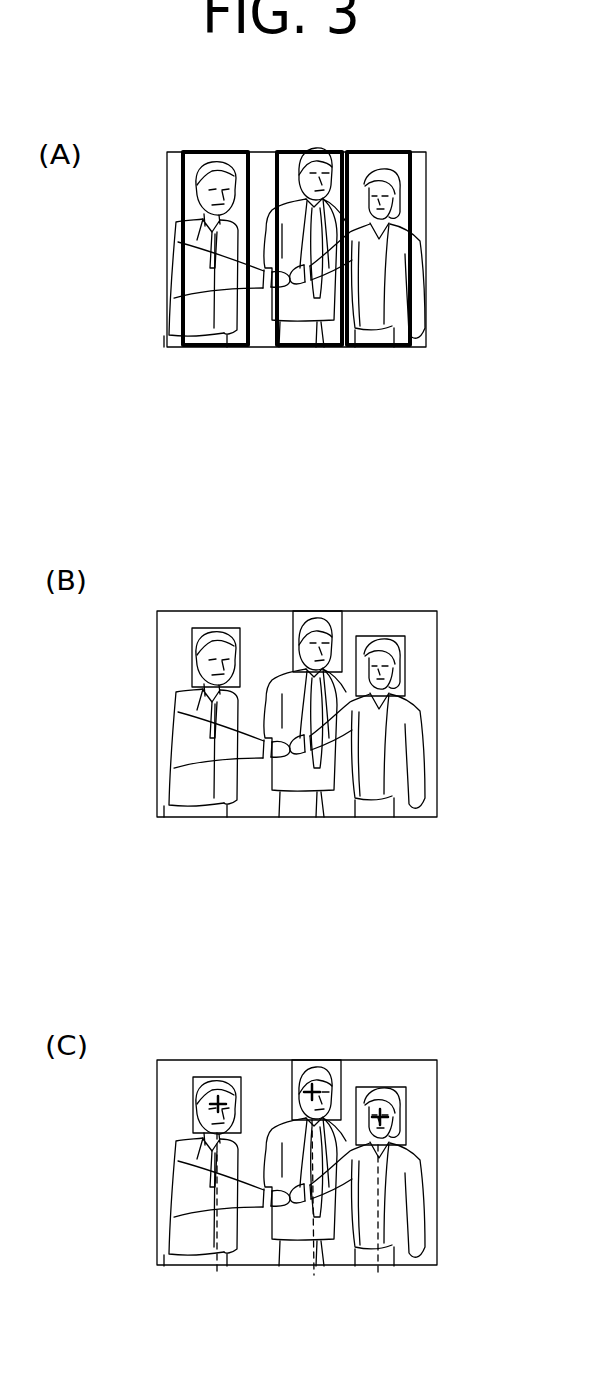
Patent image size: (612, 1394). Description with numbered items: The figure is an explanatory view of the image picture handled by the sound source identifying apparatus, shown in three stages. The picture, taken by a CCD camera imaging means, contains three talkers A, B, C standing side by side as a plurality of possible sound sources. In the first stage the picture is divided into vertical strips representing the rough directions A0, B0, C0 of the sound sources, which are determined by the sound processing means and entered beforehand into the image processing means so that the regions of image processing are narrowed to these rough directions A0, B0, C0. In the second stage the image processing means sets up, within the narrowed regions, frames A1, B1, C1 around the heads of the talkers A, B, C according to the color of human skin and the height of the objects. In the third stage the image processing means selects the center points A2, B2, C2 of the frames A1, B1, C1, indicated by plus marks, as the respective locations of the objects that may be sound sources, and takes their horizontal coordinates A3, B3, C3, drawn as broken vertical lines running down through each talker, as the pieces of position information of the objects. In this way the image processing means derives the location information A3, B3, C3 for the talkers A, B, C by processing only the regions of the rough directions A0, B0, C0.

The talker A is at (203, 345).
The talker B is at (300, 345).
The talker C is at (383, 345).
The rough direction A0 is at (190, 170).
The rough direction B0 is at (277, 170).
The rough direction C0 is at (410, 172).
The frame A1 is at (190, 630).
The frame B1 is at (327, 610).
The frame C1 is at (405, 655).
The center point A2 is at (222, 1100).
The center point B2 is at (316, 1088).
The center point C2 is at (388, 1115).
The horizontal coordinate A3 is at (207, 1221).
The horizontal coordinate B3 is at (315, 1215).
The horizontal coordinate C3 is at (390, 1227).